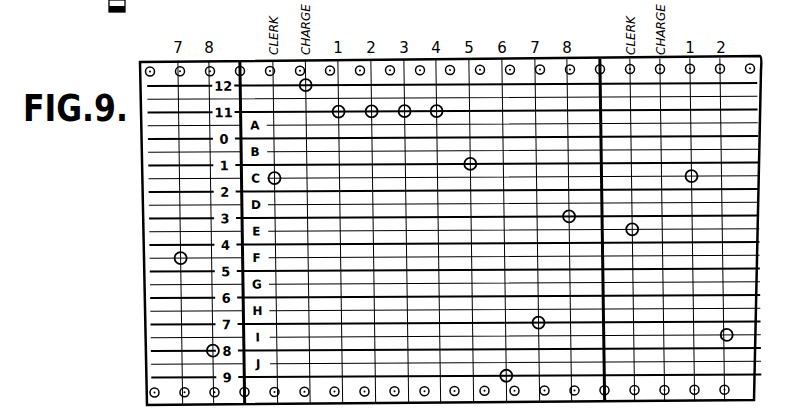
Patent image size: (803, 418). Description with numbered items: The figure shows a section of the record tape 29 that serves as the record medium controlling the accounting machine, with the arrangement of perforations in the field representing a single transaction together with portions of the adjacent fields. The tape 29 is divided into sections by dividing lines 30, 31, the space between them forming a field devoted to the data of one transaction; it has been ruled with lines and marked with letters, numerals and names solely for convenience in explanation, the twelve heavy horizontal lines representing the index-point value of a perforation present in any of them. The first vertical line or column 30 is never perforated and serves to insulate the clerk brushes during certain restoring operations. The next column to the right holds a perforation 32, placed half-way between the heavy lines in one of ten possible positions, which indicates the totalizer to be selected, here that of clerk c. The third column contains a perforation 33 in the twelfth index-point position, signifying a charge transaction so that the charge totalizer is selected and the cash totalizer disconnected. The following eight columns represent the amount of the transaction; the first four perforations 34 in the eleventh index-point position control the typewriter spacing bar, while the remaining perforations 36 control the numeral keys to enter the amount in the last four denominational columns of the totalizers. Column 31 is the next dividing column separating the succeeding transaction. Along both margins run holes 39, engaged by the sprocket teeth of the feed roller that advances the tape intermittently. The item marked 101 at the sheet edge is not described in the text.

The web or tape 29 is at (160, 149).
The first vertical line or column 30 is at (243, 80).
The dividing column 31 is at (606, 78).
The perforation 32 is at (280, 178).
The perforation 33 is at (307, 81).
The perforations 34 is at (341, 117).
The perforations 36 is at (476, 163).
The holes 39 is at (450, 66).
The element of adjacent figure 101 is at (108, 3).